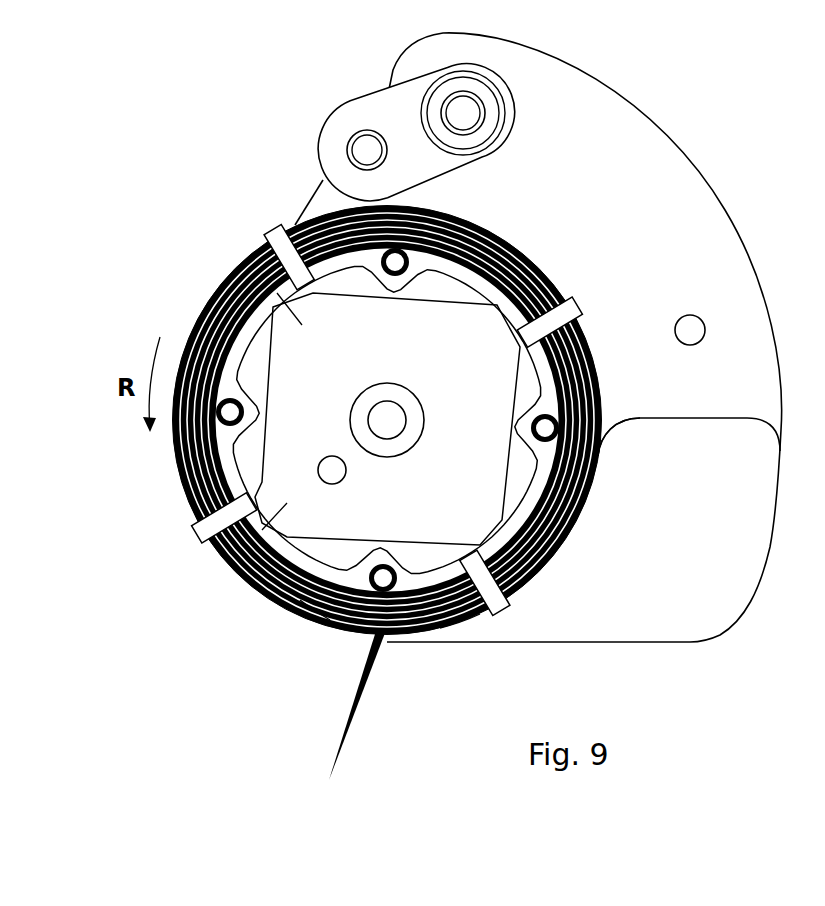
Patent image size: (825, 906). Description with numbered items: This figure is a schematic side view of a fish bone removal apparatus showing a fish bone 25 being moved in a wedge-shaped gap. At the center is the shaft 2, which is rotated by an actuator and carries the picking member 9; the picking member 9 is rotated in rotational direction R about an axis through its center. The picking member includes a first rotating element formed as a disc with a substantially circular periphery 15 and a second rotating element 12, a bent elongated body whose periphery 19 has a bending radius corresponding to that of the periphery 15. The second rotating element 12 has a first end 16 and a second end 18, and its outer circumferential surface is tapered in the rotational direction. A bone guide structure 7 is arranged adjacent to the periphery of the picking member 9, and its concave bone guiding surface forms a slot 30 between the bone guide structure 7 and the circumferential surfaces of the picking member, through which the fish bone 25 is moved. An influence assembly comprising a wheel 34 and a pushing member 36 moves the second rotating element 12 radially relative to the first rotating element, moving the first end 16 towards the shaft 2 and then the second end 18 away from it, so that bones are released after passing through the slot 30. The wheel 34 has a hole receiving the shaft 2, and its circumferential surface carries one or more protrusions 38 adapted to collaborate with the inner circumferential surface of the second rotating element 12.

The shaft 2 is at (405, 404).
The bone guide structure 7 is at (730, 553).
The picking member 9 is at (195, 305).
The second rotating element 12 is at (278, 602).
The periphery 15 is at (585, 305).
The first end 16 is at (292, 232).
The second end 18 is at (569, 292).
The periphery 19 is at (508, 228).
The fish bone 25 is at (342, 735).
The slot 30 is at (458, 628).
The wheel 34 is at (240, 562).
The pushing member 36 is at (348, 122).
The protrusion 38 is at (262, 262).